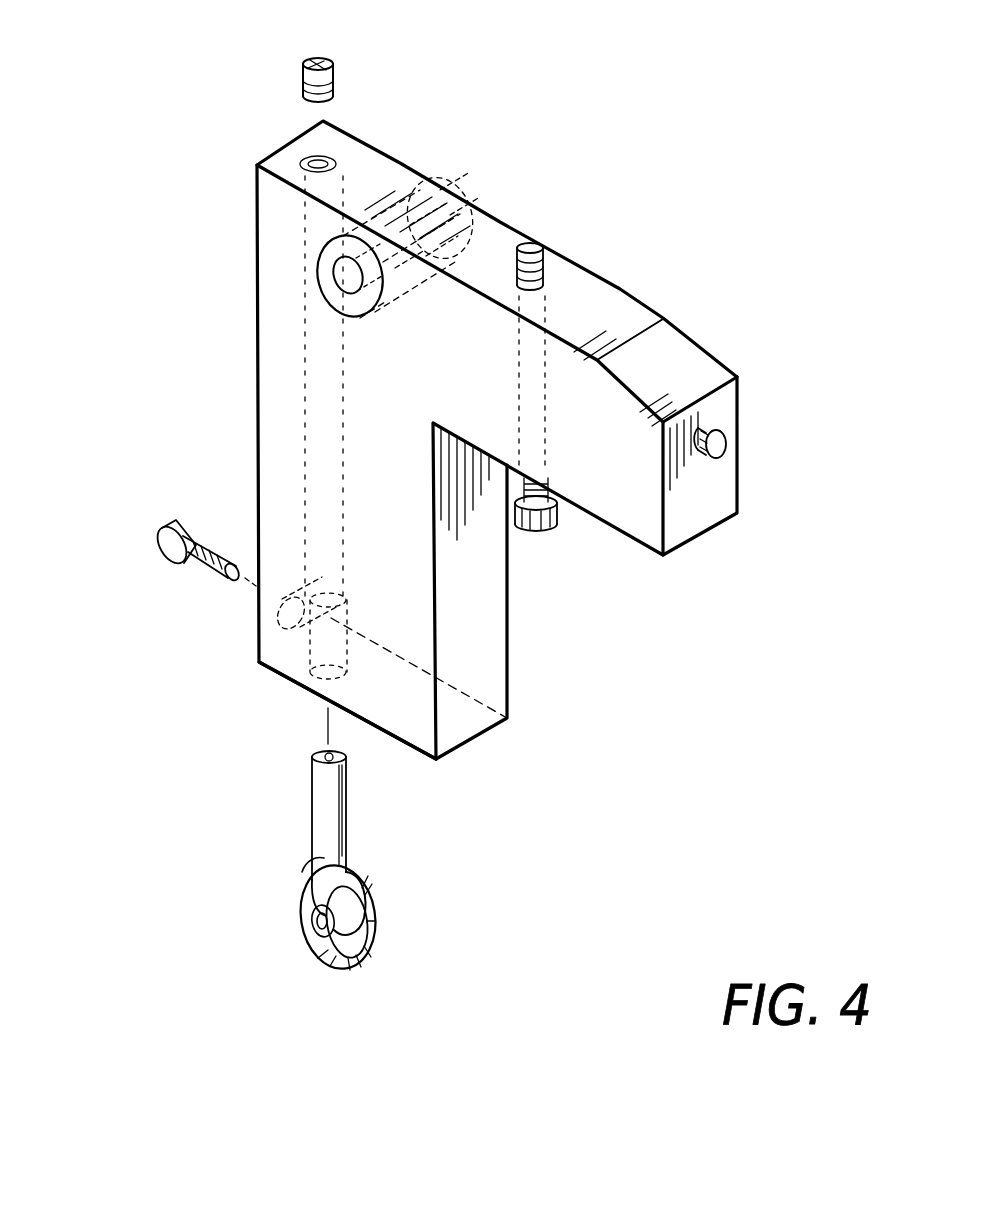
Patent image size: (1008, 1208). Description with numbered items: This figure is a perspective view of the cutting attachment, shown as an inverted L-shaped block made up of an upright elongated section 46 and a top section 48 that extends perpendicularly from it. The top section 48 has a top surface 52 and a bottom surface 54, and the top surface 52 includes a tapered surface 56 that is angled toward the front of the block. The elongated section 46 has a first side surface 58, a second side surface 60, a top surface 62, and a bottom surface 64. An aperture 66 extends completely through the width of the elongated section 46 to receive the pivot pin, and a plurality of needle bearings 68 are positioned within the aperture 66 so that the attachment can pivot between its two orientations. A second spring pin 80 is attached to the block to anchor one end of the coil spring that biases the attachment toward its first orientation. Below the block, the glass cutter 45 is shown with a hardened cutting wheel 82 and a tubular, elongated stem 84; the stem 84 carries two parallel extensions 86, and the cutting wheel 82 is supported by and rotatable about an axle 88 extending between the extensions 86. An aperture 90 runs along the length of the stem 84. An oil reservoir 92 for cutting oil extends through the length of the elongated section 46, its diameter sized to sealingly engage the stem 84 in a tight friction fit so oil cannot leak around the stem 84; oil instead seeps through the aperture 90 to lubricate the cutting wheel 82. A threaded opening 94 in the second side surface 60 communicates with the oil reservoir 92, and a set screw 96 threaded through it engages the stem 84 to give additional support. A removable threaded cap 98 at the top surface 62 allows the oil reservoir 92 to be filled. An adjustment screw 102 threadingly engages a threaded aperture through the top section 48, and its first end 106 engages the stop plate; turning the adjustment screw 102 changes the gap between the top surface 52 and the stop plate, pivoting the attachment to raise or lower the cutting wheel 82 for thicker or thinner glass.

The glass cutter 45 is at (404, 957).
The elongated section 46 is at (229, 458).
The top section 48 is at (644, 221).
The top surface 52 is at (602, 301).
The bottom surface 54 is at (613, 532).
The tapered surface 56 is at (708, 370).
The first side surface 58 is at (488, 643).
The second side surface 60 is at (257, 372).
The top surface 62 is at (452, 200).
The bottom surface 64 is at (390, 740).
The aperture 66 is at (327, 267).
The needle bearings 68 is at (337, 317).
The second spring pin 80 is at (724, 444).
The cutting wheel 82 is at (370, 928).
The tubular elongated stem 84 is at (338, 848).
The parallel extensions 86 is at (318, 886).
The axle 88 is at (316, 922).
The aperture 90 is at (322, 752).
The oil reservoir 92 is at (320, 160).
The threaded opening 94 is at (280, 607).
The set screw 96 is at (162, 538).
The removable threaded cap 98 is at (333, 58).
The adjustment screw 102 is at (537, 528).
The first end 106 is at (531, 245).